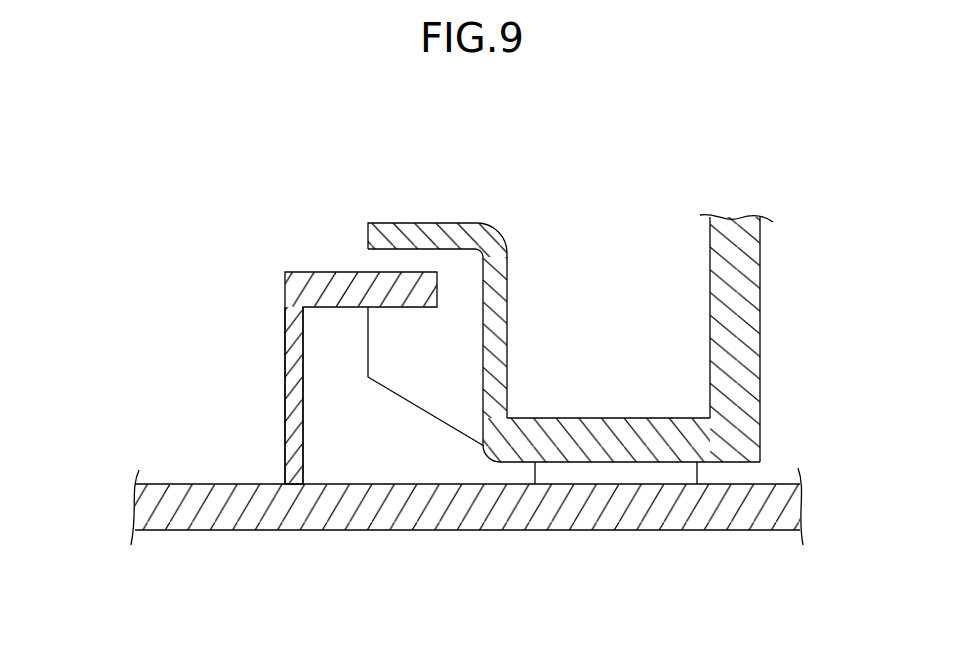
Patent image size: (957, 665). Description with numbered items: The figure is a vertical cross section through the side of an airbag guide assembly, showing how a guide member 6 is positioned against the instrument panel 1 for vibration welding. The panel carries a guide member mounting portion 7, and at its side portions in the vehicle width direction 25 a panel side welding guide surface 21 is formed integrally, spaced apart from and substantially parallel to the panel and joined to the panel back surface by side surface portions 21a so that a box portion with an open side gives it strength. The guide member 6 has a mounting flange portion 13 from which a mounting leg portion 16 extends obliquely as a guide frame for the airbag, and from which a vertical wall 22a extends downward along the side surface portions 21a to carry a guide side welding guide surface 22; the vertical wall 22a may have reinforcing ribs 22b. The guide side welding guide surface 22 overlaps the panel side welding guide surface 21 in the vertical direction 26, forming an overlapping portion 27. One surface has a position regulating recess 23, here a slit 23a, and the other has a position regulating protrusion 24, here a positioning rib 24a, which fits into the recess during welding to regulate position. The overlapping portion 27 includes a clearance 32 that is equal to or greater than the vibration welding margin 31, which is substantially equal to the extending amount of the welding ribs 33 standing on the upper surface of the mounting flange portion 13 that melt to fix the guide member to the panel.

The instrument panel 1 is at (212, 548).
The guide member 6 is at (636, 269).
The guide member mounting portion 7 is at (777, 439).
The mounting flange portion 13 is at (643, 418).
The mounting leg portion 16 is at (710, 238).
The panel side welding guide surface 21 is at (296, 288).
The side surface portions 21a is at (284, 447).
The guide side welding guide surface 22 is at (368, 236).
The vertical wall 22a is at (507, 260).
The reinforcing ribs 22b is at (470, 318).
The position regulating recess 23 is at (254, 344).
The slit 23a is at (343, 290).
The position regulating protrusion 24 is at (426, 462).
The positioning rib 24a is at (413, 367).
The vehicle width direction 25 is at (34, 598).
The vertical direction 26 is at (93, 320).
The overlapping portion 27 is at (424, 212).
The vibration welding margin 31 is at (770, 461).
The clearance 32 is at (214, 298).
The welding ribs 33 is at (618, 483).